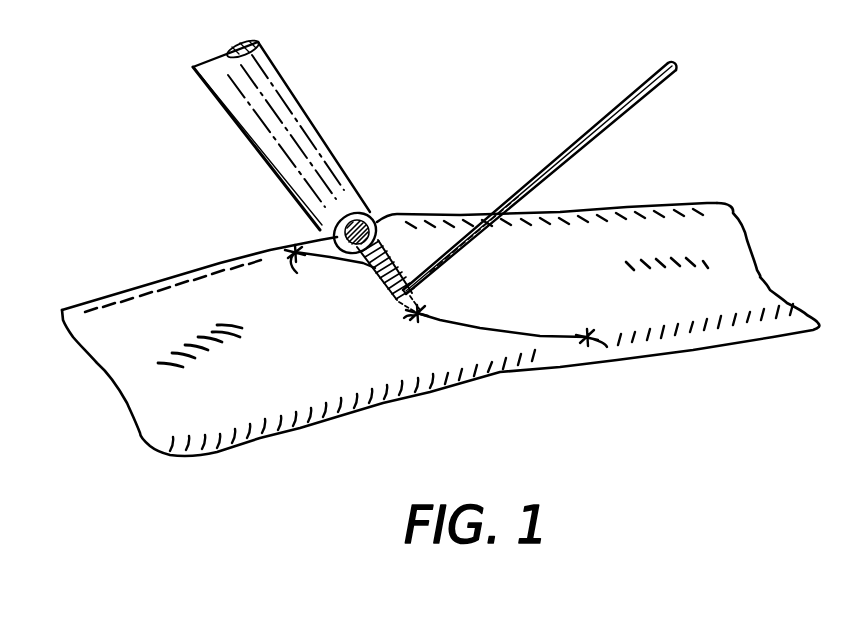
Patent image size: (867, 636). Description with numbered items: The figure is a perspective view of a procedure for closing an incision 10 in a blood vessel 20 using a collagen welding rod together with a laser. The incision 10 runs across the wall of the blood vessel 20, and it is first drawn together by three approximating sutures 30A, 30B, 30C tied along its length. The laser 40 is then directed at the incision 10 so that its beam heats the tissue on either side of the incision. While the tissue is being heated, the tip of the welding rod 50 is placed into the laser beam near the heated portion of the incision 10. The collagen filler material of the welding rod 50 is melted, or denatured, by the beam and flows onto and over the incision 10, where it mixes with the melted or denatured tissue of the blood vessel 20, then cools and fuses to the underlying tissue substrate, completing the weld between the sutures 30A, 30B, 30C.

The incision 10 is at (375, 268).
The blood vessel 20 is at (130, 342).
The approximating suture 30A is at (292, 262).
The approximating suture 30B is at (418, 316).
The approximating suture 30C is at (586, 340).
The laser 40 is at (271, 127).
The welding rod 50 is at (620, 104).